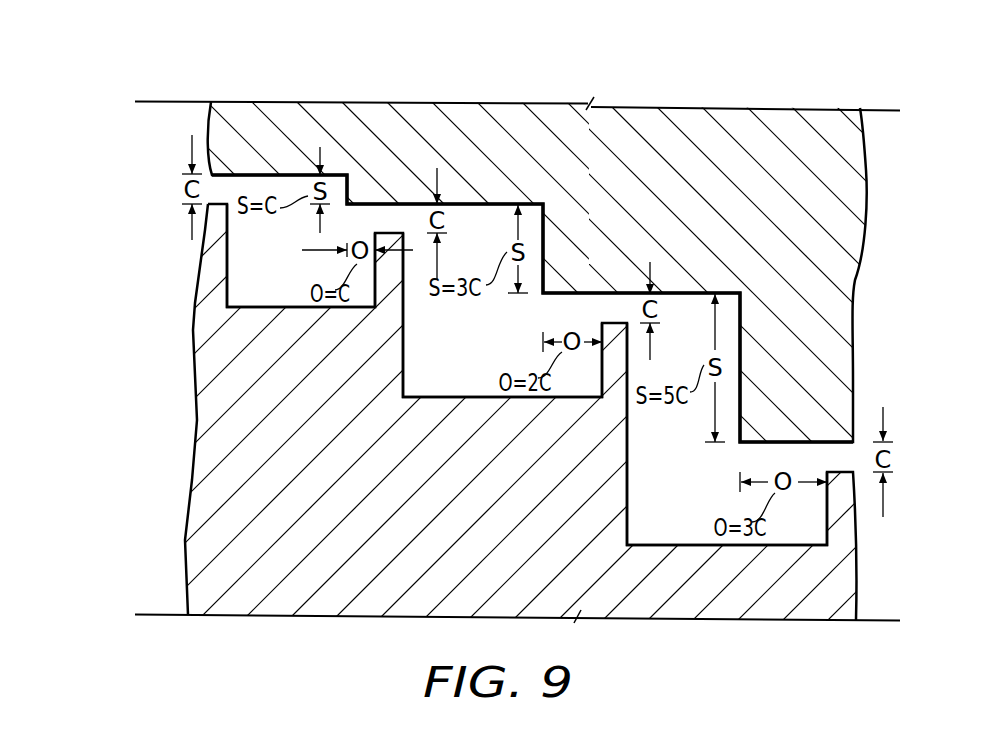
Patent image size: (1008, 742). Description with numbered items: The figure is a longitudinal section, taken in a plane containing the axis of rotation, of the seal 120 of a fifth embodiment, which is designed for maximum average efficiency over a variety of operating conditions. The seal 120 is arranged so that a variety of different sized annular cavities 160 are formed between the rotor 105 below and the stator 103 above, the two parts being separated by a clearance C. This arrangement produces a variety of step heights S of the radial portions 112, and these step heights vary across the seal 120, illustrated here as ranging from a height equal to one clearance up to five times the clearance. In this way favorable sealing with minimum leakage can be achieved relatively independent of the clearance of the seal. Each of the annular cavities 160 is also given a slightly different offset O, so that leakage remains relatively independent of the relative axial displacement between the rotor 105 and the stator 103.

The stator 103 is at (372, 106).
The rotor 105 is at (200, 455).
The radial portions 112 is at (348, 198).
The seal 120 is at (128, 546).
The annular cavities 160 is at (243, 257).